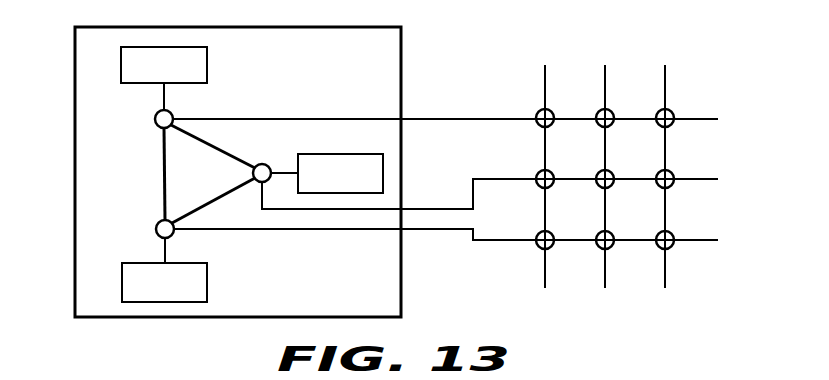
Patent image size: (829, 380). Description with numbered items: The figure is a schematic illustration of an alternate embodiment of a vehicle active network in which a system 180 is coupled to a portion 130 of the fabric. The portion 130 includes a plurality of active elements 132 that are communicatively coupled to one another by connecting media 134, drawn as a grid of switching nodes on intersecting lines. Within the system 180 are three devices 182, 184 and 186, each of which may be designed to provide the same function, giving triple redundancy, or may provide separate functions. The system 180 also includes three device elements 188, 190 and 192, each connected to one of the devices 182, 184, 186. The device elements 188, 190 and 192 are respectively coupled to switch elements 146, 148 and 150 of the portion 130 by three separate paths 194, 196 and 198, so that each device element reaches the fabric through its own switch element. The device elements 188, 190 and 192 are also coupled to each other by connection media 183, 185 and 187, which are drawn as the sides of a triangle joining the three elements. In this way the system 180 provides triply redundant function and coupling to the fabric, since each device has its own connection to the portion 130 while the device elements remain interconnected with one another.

The portion of a fabric 130 is at (633, 310).
The active elements 132 is at (612, 125).
The connecting media 134 is at (666, 148).
The switch element 146 is at (538, 125).
The switch element 148 is at (538, 186).
The switch element 150 is at (538, 247).
The system 180 is at (382, 303).
The device 182 is at (209, 67).
The connection media 183 is at (226, 193).
The device 184 is at (209, 287).
The connection media 185 is at (163, 173).
The device 186 is at (344, 153).
The connection media 187 is at (222, 155).
The device element 188 is at (154, 119).
The device element 190 is at (260, 163).
The device element 192 is at (155, 229).
The horizontal conductor line 194 is at (433, 118).
The horizontal conductor line 196 is at (433, 208).
The horizontal conductor line 198 is at (433, 230).